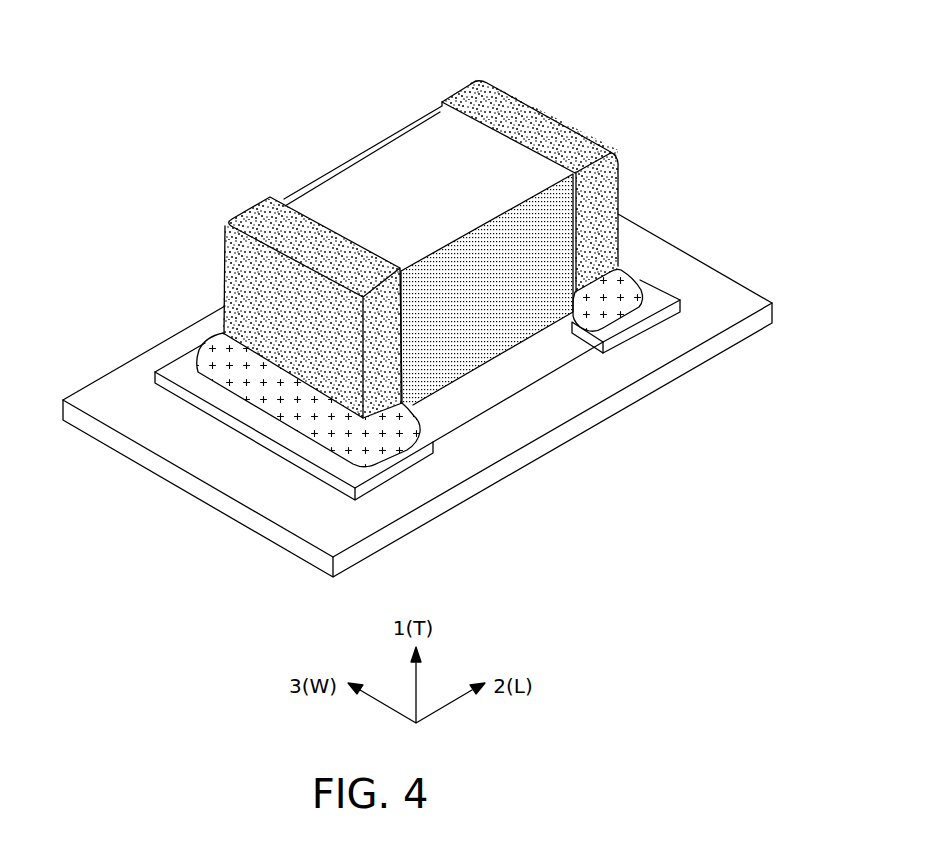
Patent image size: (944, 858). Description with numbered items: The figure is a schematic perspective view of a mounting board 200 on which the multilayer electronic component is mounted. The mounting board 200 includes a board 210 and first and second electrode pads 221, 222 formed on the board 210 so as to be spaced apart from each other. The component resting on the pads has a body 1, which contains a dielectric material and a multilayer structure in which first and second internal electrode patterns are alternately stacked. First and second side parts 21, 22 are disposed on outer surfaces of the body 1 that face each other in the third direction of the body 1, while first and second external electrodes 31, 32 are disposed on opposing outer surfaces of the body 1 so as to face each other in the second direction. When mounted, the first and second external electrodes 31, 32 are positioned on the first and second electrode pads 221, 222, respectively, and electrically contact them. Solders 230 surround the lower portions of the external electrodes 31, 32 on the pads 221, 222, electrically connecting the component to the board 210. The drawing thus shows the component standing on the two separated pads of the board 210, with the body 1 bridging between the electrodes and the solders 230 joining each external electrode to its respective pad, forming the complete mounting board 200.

The mounting board 200 is at (245, 34).
The body 1 is at (375, 286).
The first side part 21 is at (488, 343).
The second side part 22 is at (320, 177).
The first external electrode 31 is at (240, 275).
The second external electrode 32 is at (553, 135).
The board 210 is at (133, 377).
The first electrode pad 221 is at (322, 455).
The second electrode pad 222 is at (667, 299).
The solder 230 is at (242, 385).